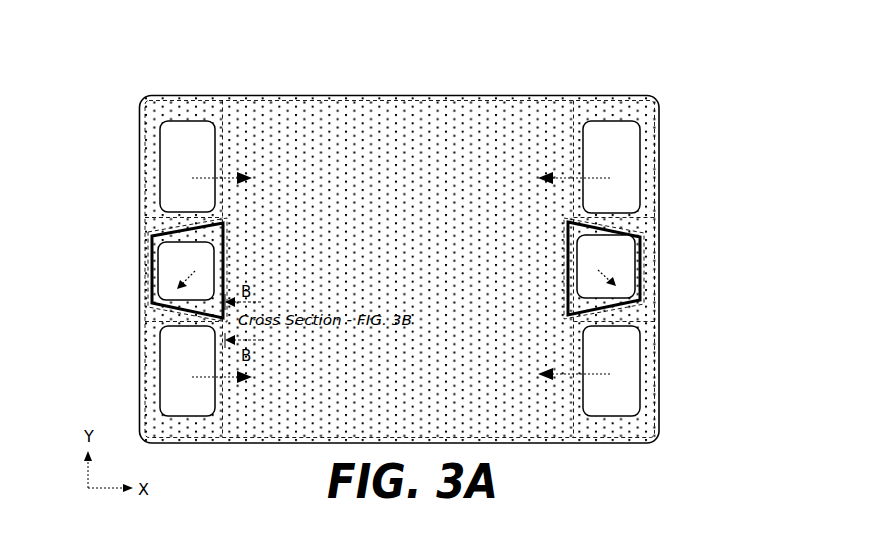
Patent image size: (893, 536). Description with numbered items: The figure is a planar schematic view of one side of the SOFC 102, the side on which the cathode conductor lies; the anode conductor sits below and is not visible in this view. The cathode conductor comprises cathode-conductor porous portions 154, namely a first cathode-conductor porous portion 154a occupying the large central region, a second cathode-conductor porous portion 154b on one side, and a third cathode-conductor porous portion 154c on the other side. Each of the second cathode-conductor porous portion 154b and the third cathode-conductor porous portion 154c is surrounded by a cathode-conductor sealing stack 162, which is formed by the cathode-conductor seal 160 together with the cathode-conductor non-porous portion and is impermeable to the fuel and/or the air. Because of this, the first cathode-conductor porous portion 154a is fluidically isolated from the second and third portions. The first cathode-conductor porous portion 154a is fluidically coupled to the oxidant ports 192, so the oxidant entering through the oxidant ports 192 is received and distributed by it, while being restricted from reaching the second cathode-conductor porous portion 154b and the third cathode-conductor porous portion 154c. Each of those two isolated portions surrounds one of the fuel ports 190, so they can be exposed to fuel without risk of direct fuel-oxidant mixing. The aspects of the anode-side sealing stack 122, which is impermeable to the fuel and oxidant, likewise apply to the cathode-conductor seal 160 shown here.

The SOFC 102 is at (699, 56).
The sealing stack 122 is at (215, 108).
The cathode-conductor porous portions 154 is at (232, 100).
The first cathode-conductor porous portion 154a is at (142, 207).
The second cathode-conductor porous portion 154b is at (142, 230).
The third cathode-conductor porous portion 154c is at (658, 232).
The oxidant ports 192 is at (166, 168).
The cathode-conductor sealing stack 162 is at (148, 244).
The cathode-conductor seal 160 is at (156, 258).
The fuel ports 190 is at (177, 289).